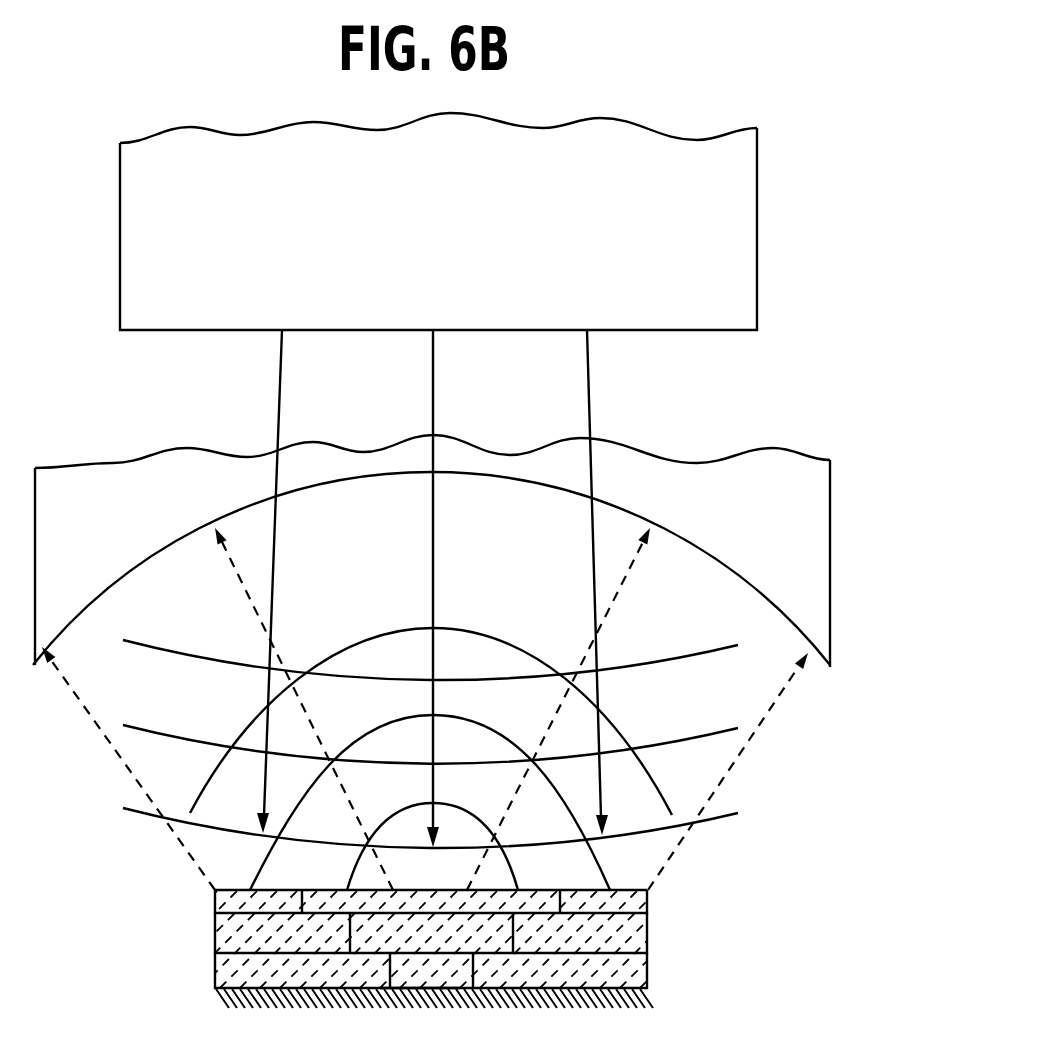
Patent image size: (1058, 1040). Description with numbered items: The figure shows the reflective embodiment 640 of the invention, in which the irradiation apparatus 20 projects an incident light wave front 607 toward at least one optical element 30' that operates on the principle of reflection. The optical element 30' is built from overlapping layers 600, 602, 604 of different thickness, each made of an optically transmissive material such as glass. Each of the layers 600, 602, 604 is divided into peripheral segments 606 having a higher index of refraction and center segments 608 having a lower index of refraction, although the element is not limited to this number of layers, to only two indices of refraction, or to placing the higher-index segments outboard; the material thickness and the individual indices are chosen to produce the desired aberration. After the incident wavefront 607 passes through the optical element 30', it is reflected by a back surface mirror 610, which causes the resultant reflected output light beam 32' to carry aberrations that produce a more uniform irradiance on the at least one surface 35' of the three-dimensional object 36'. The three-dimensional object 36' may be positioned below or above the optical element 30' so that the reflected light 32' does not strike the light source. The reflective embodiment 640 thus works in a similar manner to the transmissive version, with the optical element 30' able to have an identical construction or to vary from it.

The irradiation apparatus 20 is at (452, 240).
The reflective embodiment 640 is at (810, 198).
The 3D object 36' is at (477, 551).
The surface of the 3D object 35' is at (431, 568).
The incident light wave front 607 is at (680, 655).
The reflected output light beam 32' is at (445, 759).
The optical element 30' is at (425, 709).
The peripheral segments 606 is at (233, 888).
The first layer 600 is at (662, 902).
The second layer 602 is at (662, 942).
The third layer 604 is at (662, 980).
The center segments 608 is at (422, 1000).
The back surface mirror 610 is at (648, 1000).